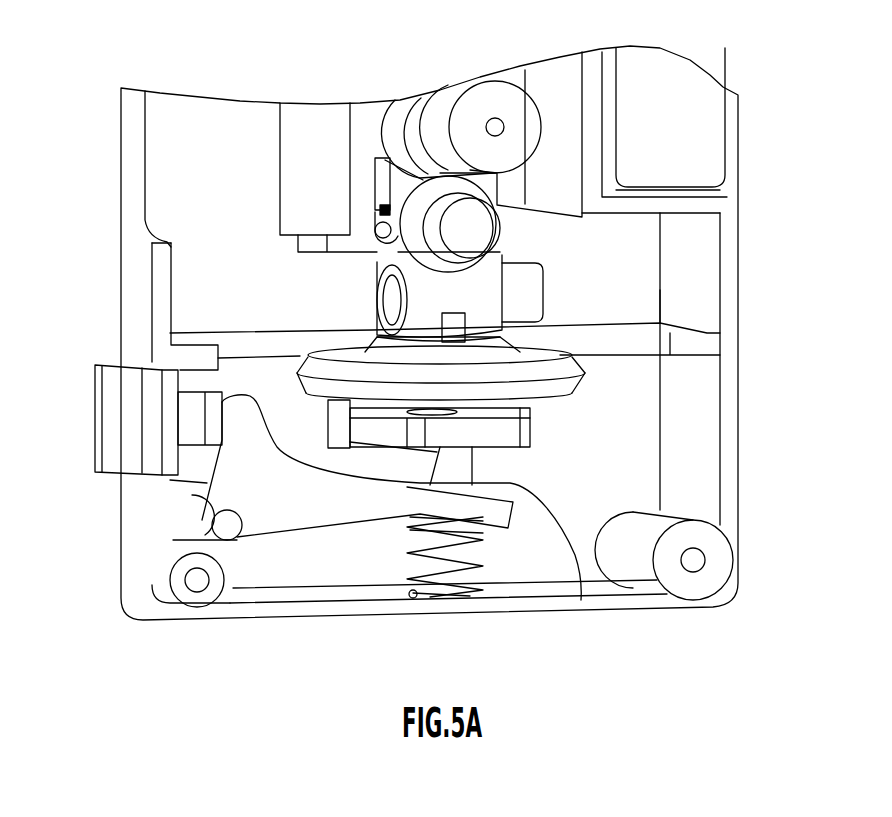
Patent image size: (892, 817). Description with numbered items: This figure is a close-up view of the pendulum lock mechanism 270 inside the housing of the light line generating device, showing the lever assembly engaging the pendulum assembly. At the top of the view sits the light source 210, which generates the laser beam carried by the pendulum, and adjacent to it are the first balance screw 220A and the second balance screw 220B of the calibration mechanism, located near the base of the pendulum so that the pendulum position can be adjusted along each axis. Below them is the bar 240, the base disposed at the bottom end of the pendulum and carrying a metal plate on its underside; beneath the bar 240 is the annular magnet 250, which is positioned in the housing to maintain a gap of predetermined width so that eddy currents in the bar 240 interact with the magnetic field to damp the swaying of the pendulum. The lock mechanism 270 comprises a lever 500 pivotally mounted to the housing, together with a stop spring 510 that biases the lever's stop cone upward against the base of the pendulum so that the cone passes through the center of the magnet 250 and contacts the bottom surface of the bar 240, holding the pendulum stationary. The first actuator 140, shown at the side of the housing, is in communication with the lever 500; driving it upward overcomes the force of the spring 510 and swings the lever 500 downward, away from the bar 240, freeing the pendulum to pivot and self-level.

The first actuator 140 is at (152, 437).
The light source 210 is at (476, 106).
The first balance screw 220A is at (483, 230).
The second balance screw 220B is at (530, 292).
The bar 240 is at (575, 380).
The magnet 250 is at (510, 430).
The lock mechanism 270 is at (259, 560).
The lever 500 is at (285, 508).
The stop spring 510 is at (581, 600).